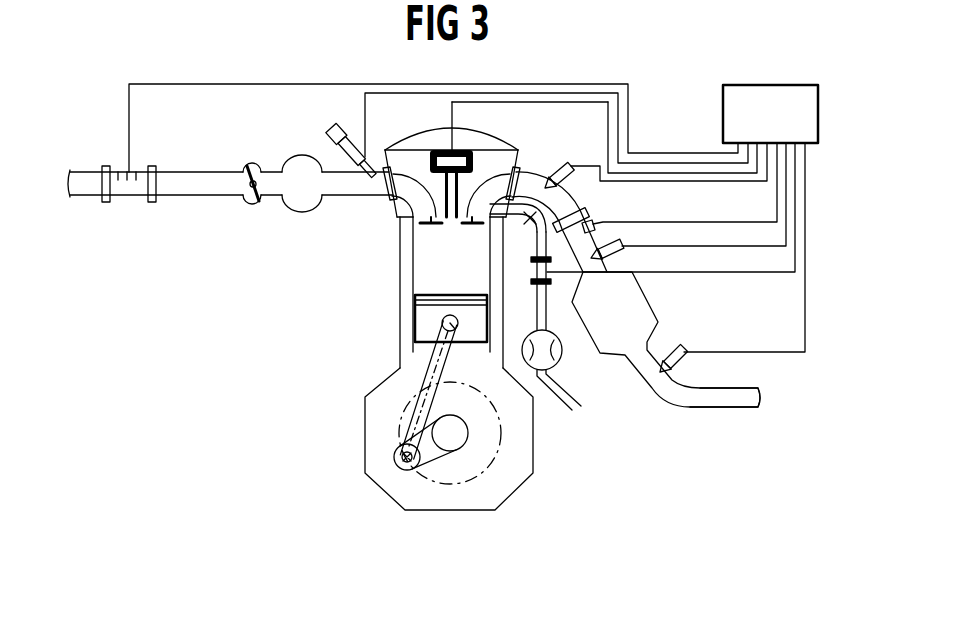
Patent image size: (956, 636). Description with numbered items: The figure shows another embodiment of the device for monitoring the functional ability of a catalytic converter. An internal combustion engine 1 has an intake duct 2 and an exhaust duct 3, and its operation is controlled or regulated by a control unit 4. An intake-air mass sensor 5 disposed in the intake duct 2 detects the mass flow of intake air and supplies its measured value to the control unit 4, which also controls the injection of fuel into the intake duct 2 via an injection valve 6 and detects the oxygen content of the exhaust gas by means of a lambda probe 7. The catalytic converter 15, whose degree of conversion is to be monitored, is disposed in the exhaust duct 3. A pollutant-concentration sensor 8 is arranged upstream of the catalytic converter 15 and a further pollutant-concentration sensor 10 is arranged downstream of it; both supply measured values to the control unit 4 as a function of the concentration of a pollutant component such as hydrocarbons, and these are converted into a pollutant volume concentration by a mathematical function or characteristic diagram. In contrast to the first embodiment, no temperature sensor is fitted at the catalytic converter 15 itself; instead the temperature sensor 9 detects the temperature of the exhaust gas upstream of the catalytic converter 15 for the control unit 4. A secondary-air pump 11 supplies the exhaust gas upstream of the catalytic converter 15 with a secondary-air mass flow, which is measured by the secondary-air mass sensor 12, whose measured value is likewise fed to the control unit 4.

The internal combustion engine 1 is at (400, 330).
The intake duct 2 is at (332, 197).
The exhaust duct 3 is at (725, 408).
The control unit 4 is at (723, 112).
The intake-air mass sensor 5 is at (104, 166).
The injection valve 6 is at (338, 134).
The lambda probe 7 is at (556, 166).
The pollutant-concentration sensor 8 is at (625, 246).
The temperature sensor 9 is at (606, 219).
The pollutant-concentration sensor 10 is at (686, 350).
The secondary-air pump 11 is at (557, 375).
The secondary-air mass sensor 12 is at (534, 284).
The catalytic converter 15 is at (625, 357).